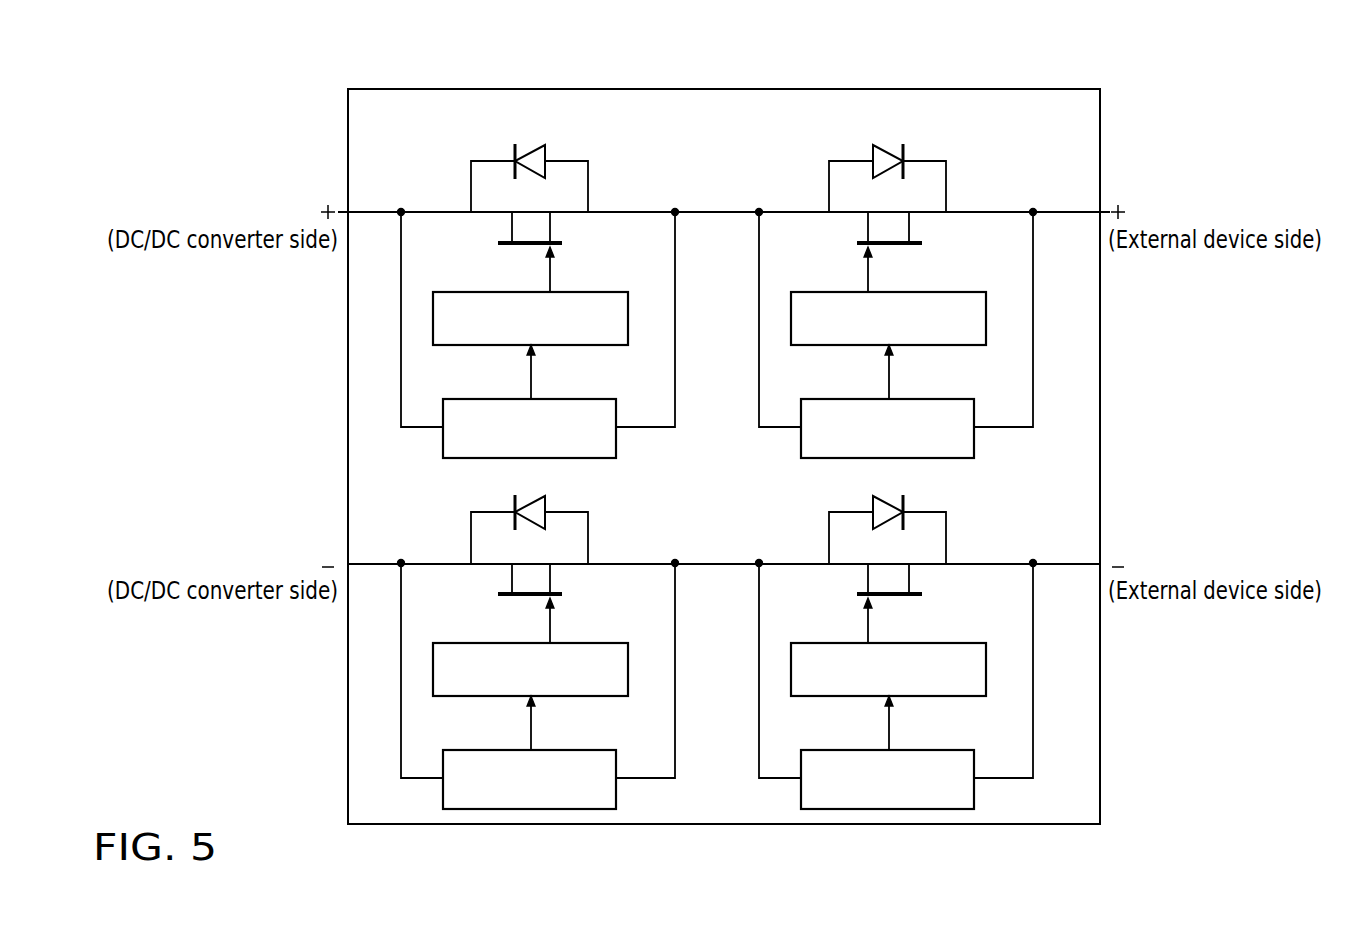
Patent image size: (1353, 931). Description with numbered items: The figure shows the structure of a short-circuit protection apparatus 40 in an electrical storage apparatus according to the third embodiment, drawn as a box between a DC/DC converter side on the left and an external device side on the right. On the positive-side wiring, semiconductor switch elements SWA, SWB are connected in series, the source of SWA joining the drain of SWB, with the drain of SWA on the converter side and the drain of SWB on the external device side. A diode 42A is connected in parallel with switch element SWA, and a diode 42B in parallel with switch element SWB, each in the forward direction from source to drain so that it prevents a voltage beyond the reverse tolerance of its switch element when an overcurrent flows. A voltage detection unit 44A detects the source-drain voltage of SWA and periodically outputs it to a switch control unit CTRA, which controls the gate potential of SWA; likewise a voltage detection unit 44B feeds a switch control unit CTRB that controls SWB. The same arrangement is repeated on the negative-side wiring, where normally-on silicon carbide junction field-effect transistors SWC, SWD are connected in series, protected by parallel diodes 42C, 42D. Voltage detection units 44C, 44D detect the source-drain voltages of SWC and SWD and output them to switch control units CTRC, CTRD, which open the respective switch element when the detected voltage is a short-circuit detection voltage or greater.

The short-circuit protection apparatus 40 is at (1021, 77).
The diode 42A is at (547, 159).
The diode 42B is at (905, 160).
The diode 42C is at (537, 517).
The diode 42D is at (894, 517).
The voltage detection unit 44A is at (601, 399).
The voltage detection unit 44B is at (959, 399).
The voltage detection unit 44C is at (534, 752).
The voltage detection unit 44D is at (892, 752).
The semiconductor switch element SWA is at (512, 229).
The semiconductor switch element SWB is at (868, 229).
The semiconductor switch element SWC is at (492, 579).
The semiconductor switch element SWD is at (852, 579).
The switch control unit CTRA is at (600, 292).
The switch control unit CTRB is at (959, 292).
The switch control unit CTRC is at (535, 646).
The switch control unit CTRD is at (894, 646).